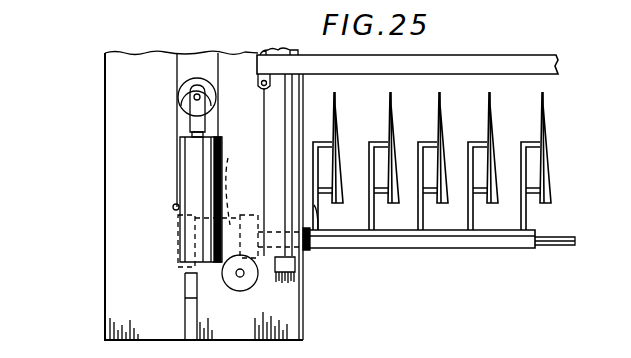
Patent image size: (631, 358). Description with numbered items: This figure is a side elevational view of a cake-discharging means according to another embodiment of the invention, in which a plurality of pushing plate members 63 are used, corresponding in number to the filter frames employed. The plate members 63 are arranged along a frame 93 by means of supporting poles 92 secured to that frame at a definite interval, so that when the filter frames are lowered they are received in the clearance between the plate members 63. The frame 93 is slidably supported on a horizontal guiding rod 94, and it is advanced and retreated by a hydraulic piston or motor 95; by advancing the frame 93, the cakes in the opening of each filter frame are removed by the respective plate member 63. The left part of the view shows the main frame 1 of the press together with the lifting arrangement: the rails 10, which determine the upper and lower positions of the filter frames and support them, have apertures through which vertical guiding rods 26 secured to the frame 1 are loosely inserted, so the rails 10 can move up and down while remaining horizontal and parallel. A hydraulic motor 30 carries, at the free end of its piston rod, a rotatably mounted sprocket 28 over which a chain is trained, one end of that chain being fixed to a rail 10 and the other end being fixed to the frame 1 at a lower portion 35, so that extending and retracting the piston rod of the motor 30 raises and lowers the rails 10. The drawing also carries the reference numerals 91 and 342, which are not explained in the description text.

The frame 1 is at (123, 262).
The rails 10 is at (492, 62).
The vertical guiding rods 26 is at (287, 112).
The sprocket 28 is at (188, 82).
The hydraulic motor 30 is at (195, 155).
The lower portion of the frame 35 is at (173, 207).
The pushing plate members 63 is at (552, 112).
The bracket arm 91 is at (318, 205).
The supporting poles 92 is at (375, 160).
The frame 93 is at (468, 248).
The horizontal guiding rod 94 is at (545, 248).
The hydraulic piston or motor 95 is at (228, 148).
The lower pulley 342 is at (253, 283).